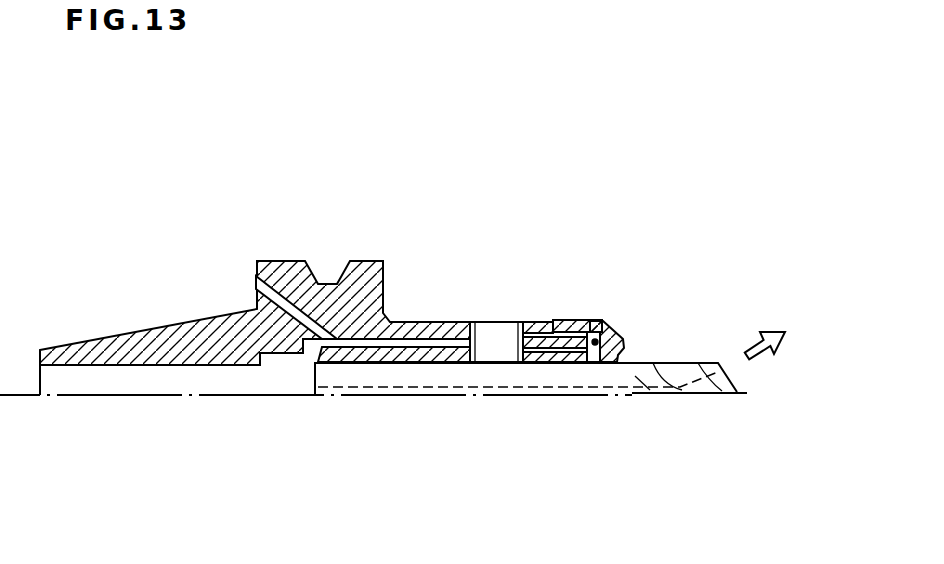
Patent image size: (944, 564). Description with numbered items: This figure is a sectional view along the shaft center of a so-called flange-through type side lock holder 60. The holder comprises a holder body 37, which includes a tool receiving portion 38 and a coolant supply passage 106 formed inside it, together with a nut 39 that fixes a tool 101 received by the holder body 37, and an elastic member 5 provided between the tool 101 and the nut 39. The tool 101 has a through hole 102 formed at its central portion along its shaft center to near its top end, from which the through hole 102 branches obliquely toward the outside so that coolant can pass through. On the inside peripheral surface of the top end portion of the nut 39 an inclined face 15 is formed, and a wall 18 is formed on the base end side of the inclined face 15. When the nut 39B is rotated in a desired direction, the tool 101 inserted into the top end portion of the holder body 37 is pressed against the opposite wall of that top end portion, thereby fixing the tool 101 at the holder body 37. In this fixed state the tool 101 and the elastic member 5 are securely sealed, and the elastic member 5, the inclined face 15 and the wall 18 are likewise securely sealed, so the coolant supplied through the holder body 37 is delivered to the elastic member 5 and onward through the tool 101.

The side lock holder 60 is at (140, 250).
The holder body 37 is at (193, 332).
The coolant supply passage 106 is at (317, 290).
The tool receiving portion 38 is at (374, 379).
The nut 39B is at (492, 347).
The nut 39 is at (573, 320).
The wall 18 is at (605, 335).
The inclined face 15 is at (620, 353).
The elastic member 5 is at (622, 358).
The tool 101 is at (430, 377).
The through hole 102 is at (602, 395).